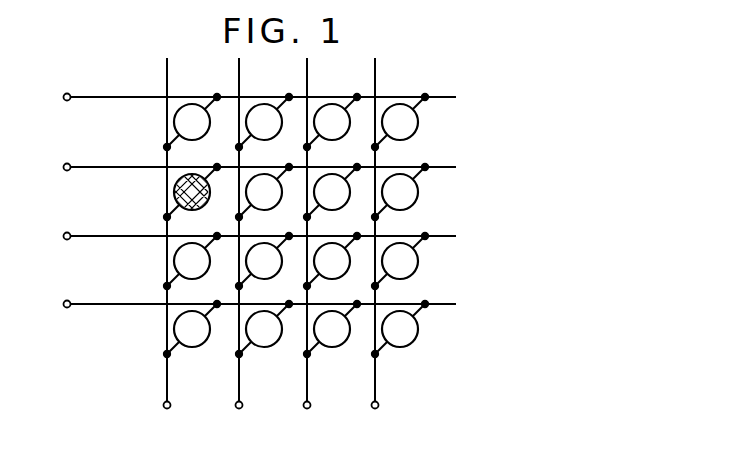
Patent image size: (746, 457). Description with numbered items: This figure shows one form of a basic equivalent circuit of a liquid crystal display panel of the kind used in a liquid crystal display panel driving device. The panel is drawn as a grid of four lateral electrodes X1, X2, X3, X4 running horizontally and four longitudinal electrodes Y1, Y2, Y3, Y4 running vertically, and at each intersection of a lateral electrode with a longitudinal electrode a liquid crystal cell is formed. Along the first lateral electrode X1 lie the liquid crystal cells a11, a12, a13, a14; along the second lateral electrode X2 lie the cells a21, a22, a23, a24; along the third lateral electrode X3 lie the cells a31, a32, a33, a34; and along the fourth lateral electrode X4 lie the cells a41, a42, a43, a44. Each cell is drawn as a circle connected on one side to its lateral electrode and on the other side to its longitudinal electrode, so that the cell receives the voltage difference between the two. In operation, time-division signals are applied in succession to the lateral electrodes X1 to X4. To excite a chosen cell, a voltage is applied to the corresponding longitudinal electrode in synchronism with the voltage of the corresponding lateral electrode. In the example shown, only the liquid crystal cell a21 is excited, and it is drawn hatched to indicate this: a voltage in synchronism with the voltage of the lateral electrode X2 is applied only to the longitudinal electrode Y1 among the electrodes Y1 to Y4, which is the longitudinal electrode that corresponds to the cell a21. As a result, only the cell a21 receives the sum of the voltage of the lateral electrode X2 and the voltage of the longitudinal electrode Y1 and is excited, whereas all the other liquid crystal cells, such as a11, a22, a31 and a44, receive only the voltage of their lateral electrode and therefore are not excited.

The lateral electrode X1 is at (241, 102).
The lateral electrode X2 is at (241, 172).
The lateral electrode X3 is at (241, 241).
The lateral electrode X4 is at (241, 309).
The longitudinal electrode Y1 is at (171, 250).
The longitudinal electrode Y2 is at (243, 250).
The longitudinal electrode Y3 is at (309, 250).
The longitudinal electrode Y4 is at (378, 250).
The liquid crystal cell a11 is at (200, 129).
The liquid crystal cell a12 is at (271, 129).
The liquid crystal cell a13 is at (339, 129).
The liquid crystal cell a14 is at (408, 129).
The liquid crystal cell a21 is at (200, 199).
The liquid crystal cell a22 is at (271, 199).
The liquid crystal cell a23 is at (339, 199).
The liquid crystal cell a24 is at (408, 199).
The liquid crystal cell a31 is at (200, 267).
The liquid crystal cell a32 is at (271, 267).
The liquid crystal cell a33 is at (339, 267).
The liquid crystal cell a34 is at (408, 267).
The liquid crystal cell a41 is at (200, 333).
The liquid crystal cell a42 is at (271, 333).
The liquid crystal cell a43 is at (339, 333).
The liquid crystal cell a44 is at (408, 333).